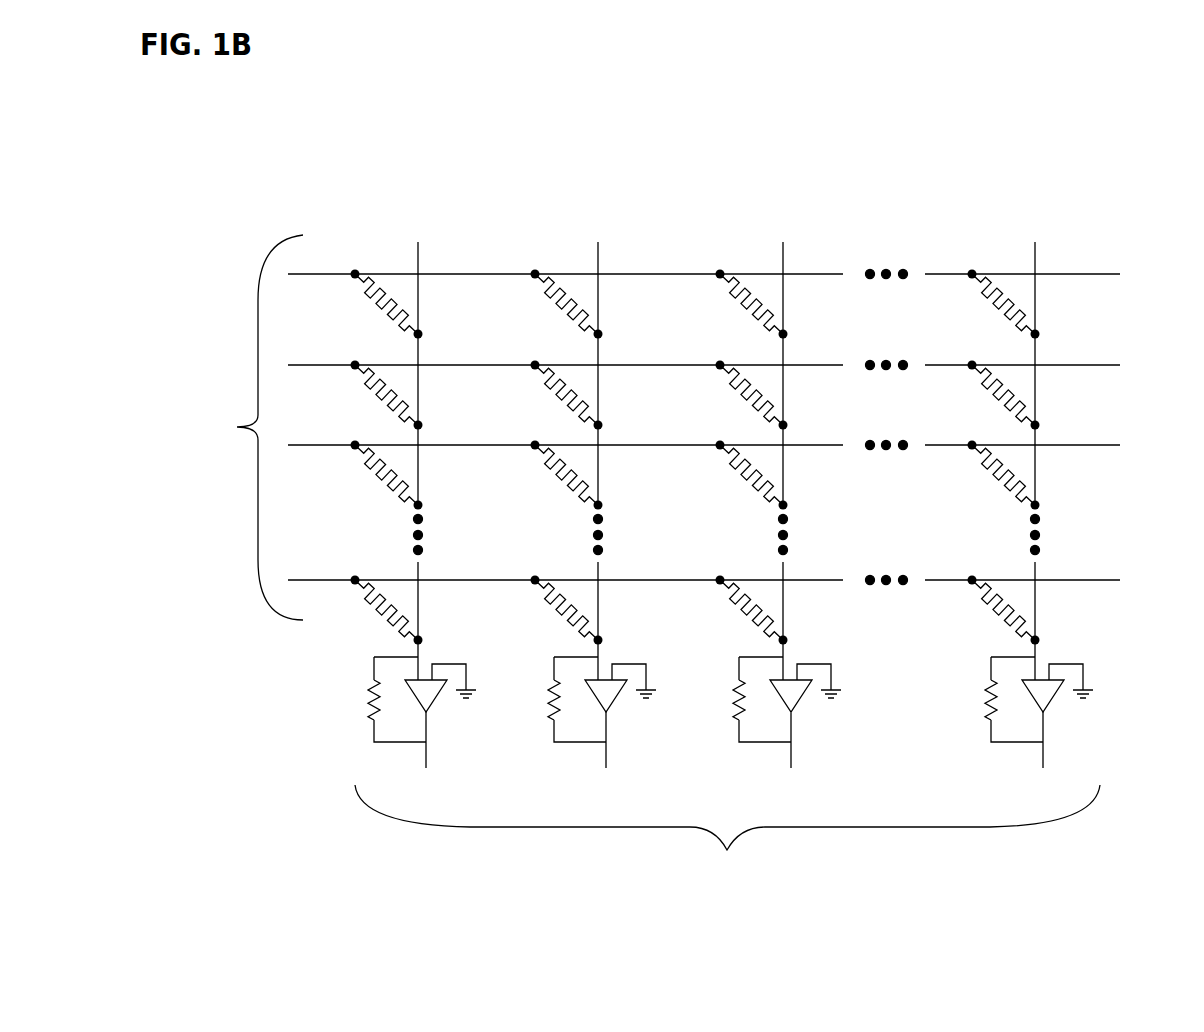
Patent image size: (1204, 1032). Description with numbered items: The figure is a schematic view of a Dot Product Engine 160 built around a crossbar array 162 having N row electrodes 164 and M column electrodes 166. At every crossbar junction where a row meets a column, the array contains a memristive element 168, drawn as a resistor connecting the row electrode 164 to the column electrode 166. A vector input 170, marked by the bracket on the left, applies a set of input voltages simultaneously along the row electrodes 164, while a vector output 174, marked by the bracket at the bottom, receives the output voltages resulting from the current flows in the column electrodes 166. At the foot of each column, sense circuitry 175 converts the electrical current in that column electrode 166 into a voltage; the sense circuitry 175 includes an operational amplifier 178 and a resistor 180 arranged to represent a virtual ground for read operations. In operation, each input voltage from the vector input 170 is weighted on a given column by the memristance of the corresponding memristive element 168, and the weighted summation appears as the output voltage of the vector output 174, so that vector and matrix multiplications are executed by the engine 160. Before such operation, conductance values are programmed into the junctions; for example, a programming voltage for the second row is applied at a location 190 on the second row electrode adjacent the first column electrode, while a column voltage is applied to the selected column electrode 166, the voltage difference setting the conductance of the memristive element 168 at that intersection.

The Dot Product Engine 160 is at (698, 327).
The crossbar array 162 is at (708, 240).
The row electrodes 164 is at (1048, 276).
The column electrodes 166 is at (1035, 257).
The memristive element 168 is at (980, 477).
The vector input 170 is at (260, 522).
The vector output 174 is at (473, 825).
The sense circuitry 175 is at (835, 635).
The operational amplifier 178 is at (795, 695).
The resistor 180 is at (727, 670).
The location 190 is at (325, 362).